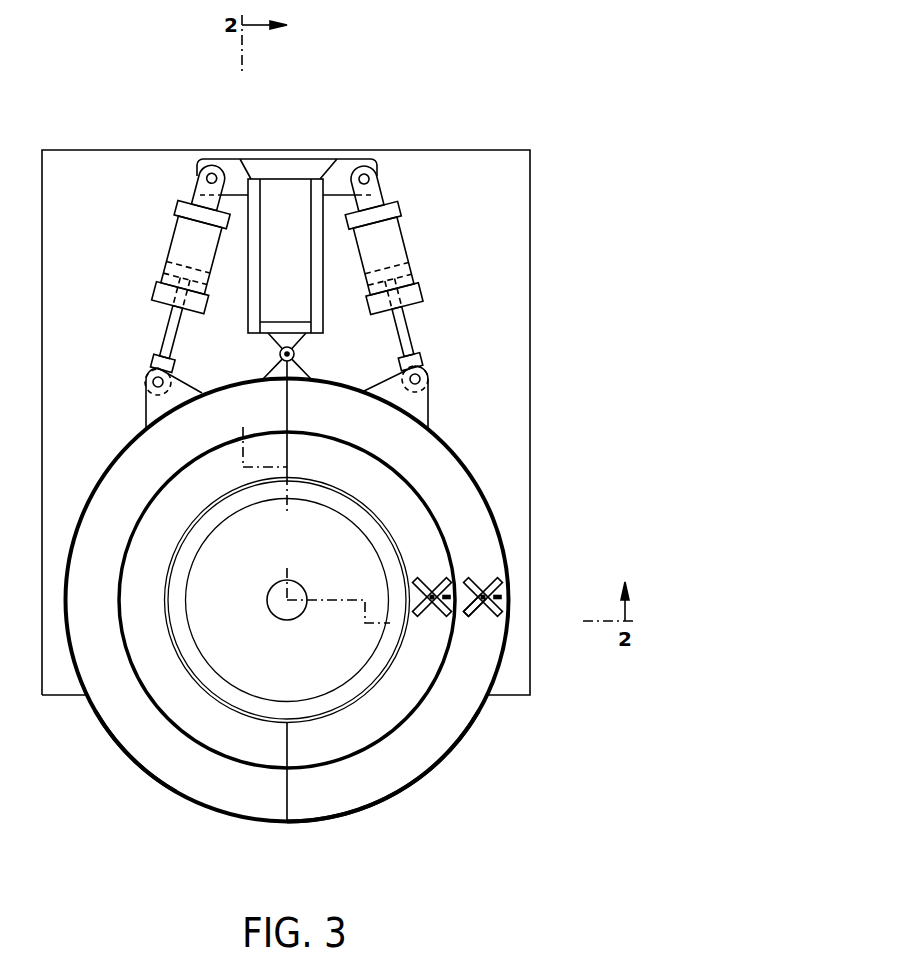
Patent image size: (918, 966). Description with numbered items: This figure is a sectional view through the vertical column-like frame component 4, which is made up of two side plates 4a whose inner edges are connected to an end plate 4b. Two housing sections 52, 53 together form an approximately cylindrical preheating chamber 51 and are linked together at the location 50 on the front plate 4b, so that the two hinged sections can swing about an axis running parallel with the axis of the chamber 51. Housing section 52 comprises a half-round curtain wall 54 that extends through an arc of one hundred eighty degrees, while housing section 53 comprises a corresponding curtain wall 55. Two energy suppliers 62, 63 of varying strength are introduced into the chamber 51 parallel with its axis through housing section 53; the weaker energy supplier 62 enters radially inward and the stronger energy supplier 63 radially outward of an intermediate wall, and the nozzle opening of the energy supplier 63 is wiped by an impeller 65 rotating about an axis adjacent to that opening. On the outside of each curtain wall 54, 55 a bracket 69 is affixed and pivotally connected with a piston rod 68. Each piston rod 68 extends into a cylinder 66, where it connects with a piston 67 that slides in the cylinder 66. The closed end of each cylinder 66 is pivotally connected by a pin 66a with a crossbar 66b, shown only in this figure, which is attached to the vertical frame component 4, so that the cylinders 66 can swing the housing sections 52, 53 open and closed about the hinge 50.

The frame component 4 is at (303, 171).
The side plates 4a is at (252, 180).
The end plate 4b is at (303, 329).
The hinge location 50 is at (274, 355).
The preheating chamber 51 is at (472, 516).
The housing section 52 is at (144, 783).
The housing section 53 is at (453, 764).
The curtain wall 54 is at (114, 746).
The curtain wall 55 is at (422, 776).
The energy supplier 62 is at (452, 594).
The energy supplier 63 is at (505, 596).
The impeller 65 is at (472, 613).
The cylinder 66 is at (188, 223).
The pin 66a is at (208, 175).
The crossbar 66b is at (277, 158).
The piston 67 is at (168, 268).
The piston rod 68 is at (170, 322).
The bracket 69 is at (152, 410).